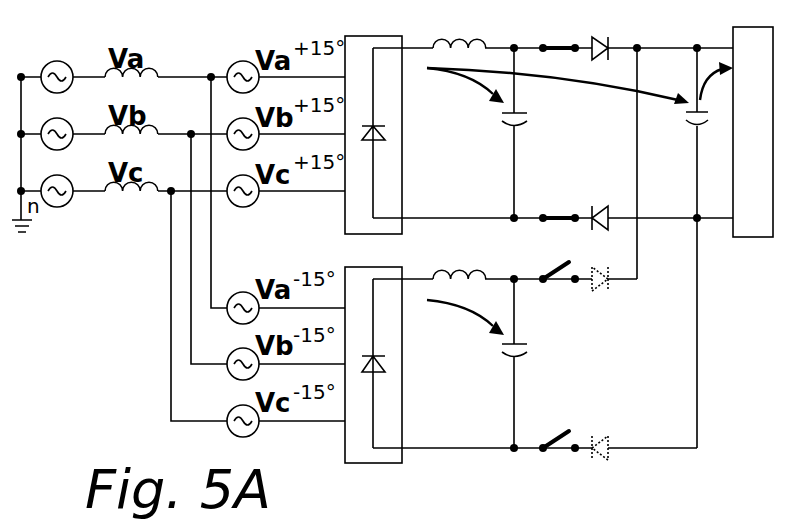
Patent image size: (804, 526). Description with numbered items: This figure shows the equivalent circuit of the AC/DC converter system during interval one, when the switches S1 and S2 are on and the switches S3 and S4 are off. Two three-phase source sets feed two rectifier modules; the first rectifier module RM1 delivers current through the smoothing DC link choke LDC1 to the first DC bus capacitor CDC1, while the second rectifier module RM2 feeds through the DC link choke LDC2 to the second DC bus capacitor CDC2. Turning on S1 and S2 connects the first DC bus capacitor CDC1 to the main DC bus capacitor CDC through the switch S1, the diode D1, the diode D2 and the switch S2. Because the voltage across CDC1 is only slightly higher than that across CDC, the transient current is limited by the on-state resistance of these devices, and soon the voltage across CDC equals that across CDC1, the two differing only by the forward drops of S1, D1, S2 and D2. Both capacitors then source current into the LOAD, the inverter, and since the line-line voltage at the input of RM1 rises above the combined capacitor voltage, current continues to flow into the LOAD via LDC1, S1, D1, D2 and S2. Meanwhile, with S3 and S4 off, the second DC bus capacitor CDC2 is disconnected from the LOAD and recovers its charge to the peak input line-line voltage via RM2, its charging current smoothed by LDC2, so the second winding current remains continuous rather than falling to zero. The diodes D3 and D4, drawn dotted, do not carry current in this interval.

The rectifier module RM1 is at (373, 122).
The rectifier module RM2 is at (373, 355).
The smoothing DC link choke LDC1 is at (459, 28).
The DC link choke LDC2 is at (459, 259).
The first DC bus capacitor CDC1 is at (488, 133).
The second DC bus capacitor CDC2 is at (488, 363).
The main DC bus capacitor CDC is at (677, 132).
The switch S1 is at (559, 35).
The switch S2 is at (559, 208).
The switch S3 is at (559, 284).
The switch S4 is at (555, 431).
The diode D1 is at (600, 37).
The diode D2 is at (600, 206).
The diode D3 is at (600, 291).
The diode D4 is at (600, 435).
The load LOAD is at (753, 132).